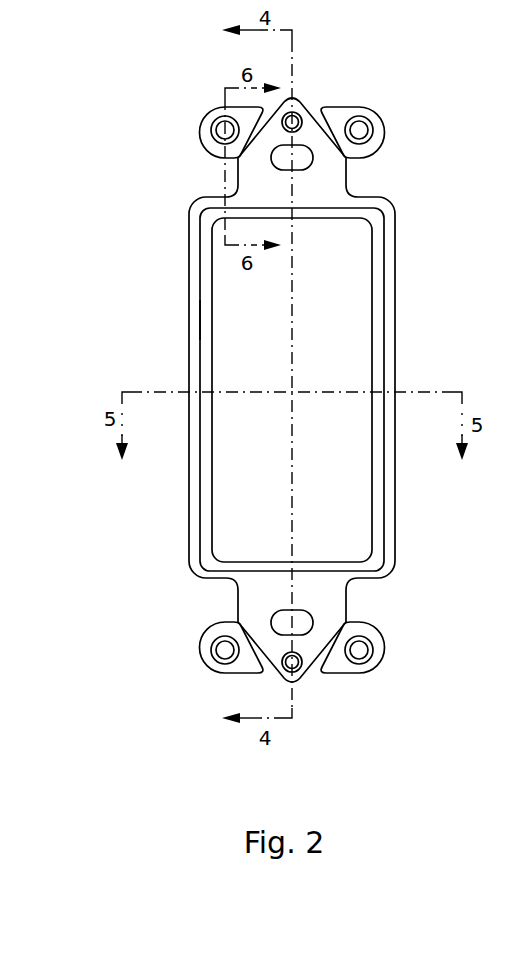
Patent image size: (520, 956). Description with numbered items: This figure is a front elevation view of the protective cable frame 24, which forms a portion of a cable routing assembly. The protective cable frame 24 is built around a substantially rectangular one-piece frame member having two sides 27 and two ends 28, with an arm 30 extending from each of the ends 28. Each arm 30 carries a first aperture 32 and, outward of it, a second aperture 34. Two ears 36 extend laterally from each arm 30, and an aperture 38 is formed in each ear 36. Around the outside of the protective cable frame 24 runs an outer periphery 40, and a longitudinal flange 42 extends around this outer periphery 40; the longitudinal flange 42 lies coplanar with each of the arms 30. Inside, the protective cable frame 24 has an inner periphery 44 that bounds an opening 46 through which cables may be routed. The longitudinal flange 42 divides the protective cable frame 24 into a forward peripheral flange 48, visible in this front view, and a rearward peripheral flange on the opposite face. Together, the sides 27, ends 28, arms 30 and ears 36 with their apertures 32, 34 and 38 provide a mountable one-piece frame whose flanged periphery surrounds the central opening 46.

The protective cable frame 24 is at (130, 196).
The sides 27 is at (197, 320).
The ends 28 is at (273, 205).
The arm 30 is at (342, 175).
The first aperture 32 is at (307, 163).
The second aperture 34 is at (292, 117).
The ears 36 is at (384, 118).
The aperture 38 is at (225, 130).
The outer periphery 40 is at (385, 283).
The longitudinal flange 42 is at (396, 340).
The inner periphery 44 is at (213, 437).
The opening 46 is at (345, 490).
The forward peripheral flange 48 is at (386, 473).